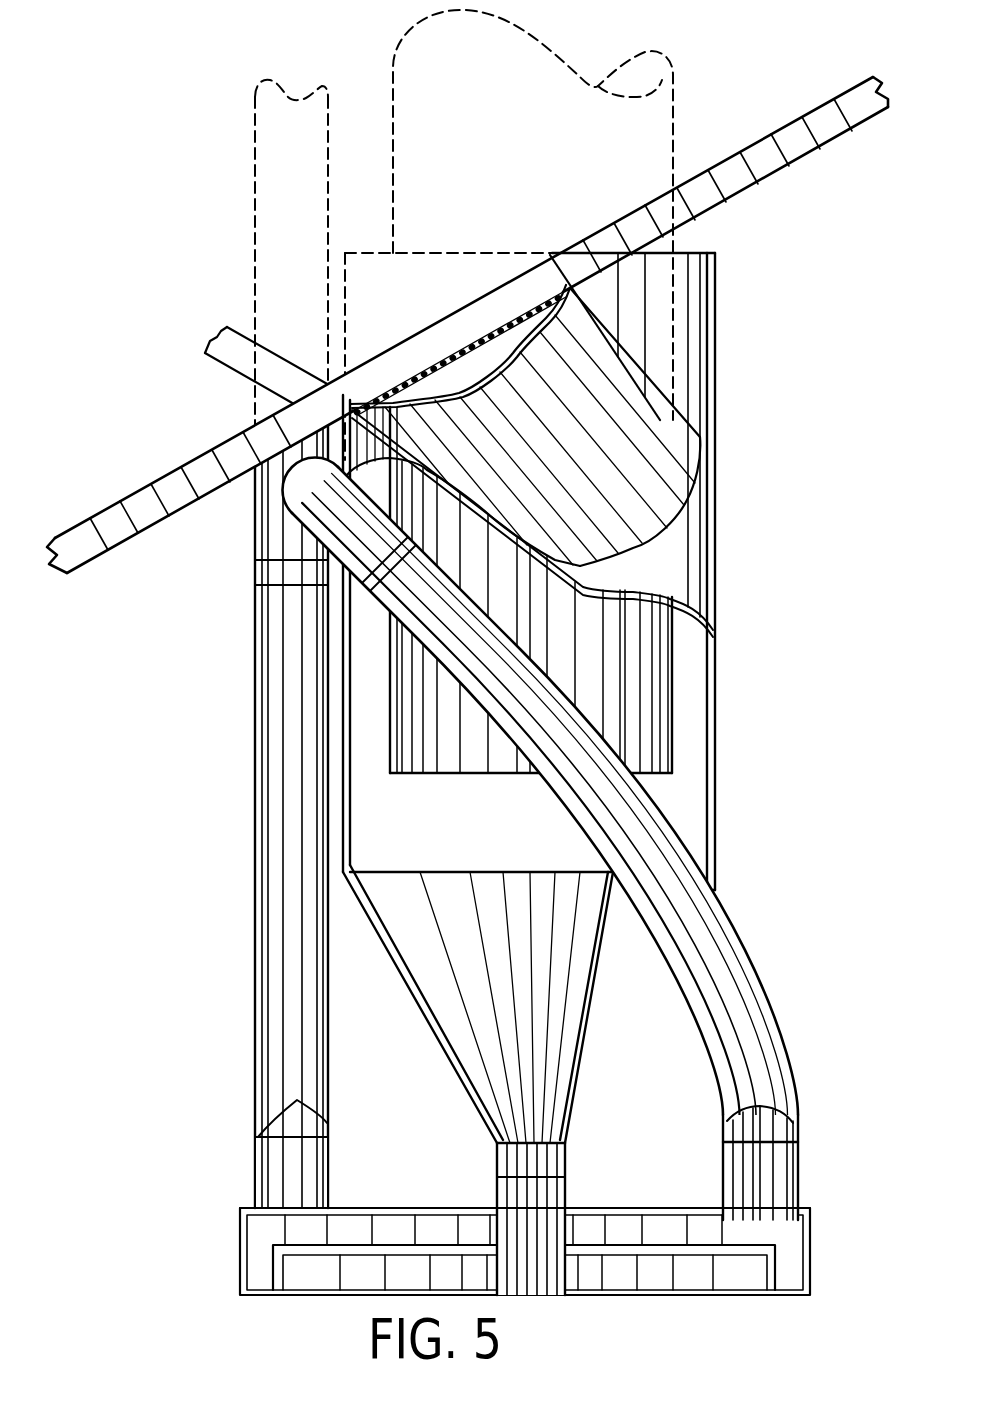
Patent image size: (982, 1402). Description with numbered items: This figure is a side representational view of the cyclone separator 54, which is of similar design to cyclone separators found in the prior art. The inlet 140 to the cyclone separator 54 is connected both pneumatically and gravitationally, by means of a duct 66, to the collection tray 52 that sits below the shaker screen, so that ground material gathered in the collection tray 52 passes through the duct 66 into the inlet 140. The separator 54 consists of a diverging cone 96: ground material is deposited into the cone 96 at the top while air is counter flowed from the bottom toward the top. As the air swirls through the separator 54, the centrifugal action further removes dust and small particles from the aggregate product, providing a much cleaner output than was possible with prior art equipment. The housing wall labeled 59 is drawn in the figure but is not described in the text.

The collection tray 52 is at (740, 83).
The cyclone separator 54 is at (226, 722).
The housing 59 is at (714, 657).
The duct 66 is at (684, 437).
The diverging cone 96 is at (447, 1047).
The inlet 140 is at (684, 508).